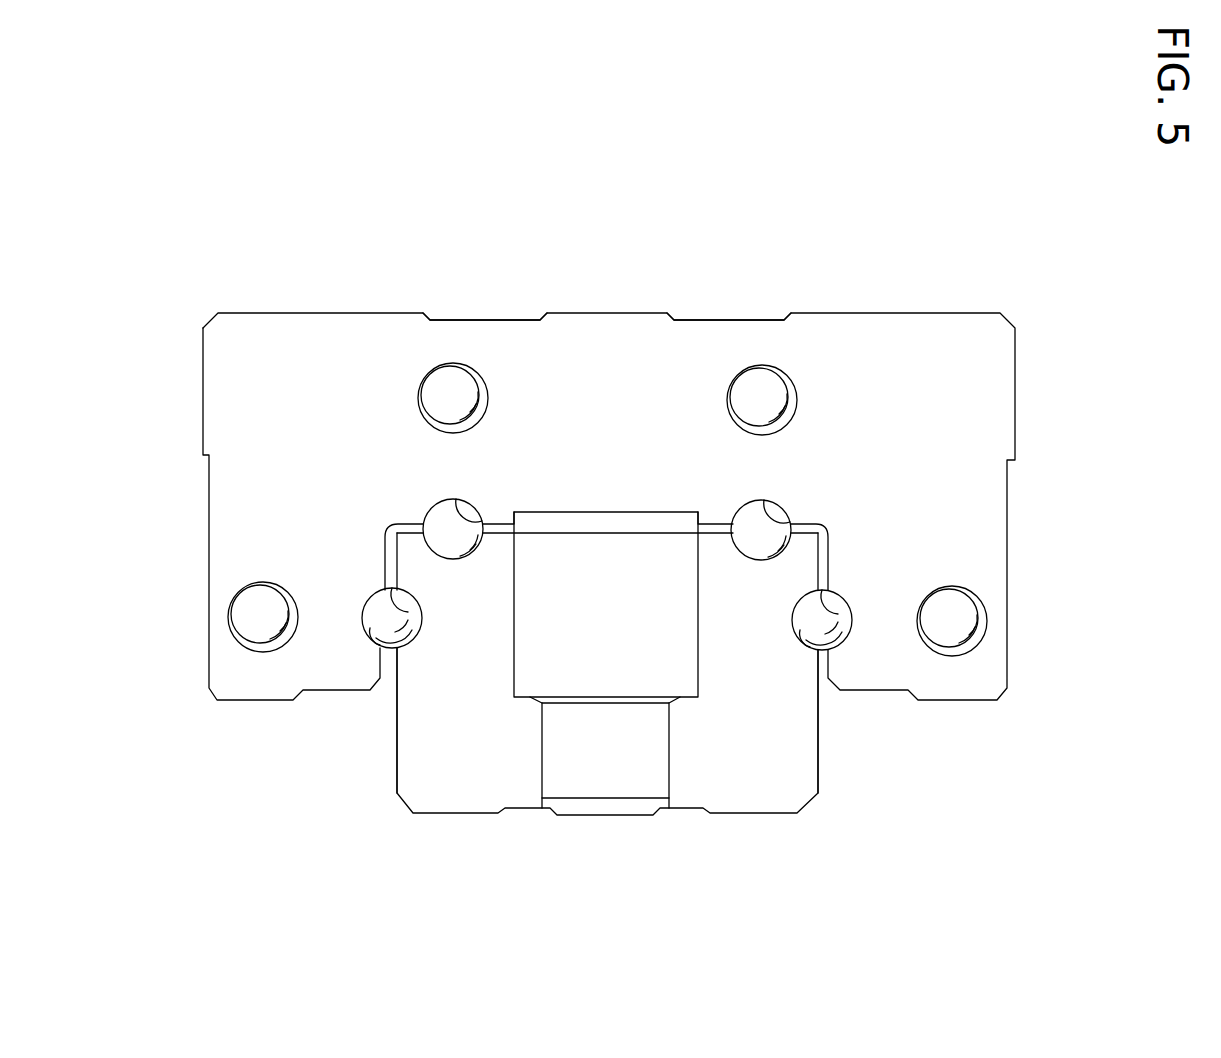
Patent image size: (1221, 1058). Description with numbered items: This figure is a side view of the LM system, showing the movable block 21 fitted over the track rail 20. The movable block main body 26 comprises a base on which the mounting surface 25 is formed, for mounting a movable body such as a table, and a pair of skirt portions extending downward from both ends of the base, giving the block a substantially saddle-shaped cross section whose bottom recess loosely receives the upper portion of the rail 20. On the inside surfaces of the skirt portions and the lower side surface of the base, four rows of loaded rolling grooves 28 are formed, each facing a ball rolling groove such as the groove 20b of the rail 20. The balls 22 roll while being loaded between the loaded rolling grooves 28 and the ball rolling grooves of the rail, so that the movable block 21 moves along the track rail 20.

The track rail 20 is at (452, 834).
The ball rolling groove 20b is at (403, 648).
The movable block 21 is at (951, 299).
The ball 22 is at (440, 526).
The mounting surface 25 is at (273, 313).
The movable block main body 26 is at (486, 319).
The loaded rolling groove 28 is at (483, 518).